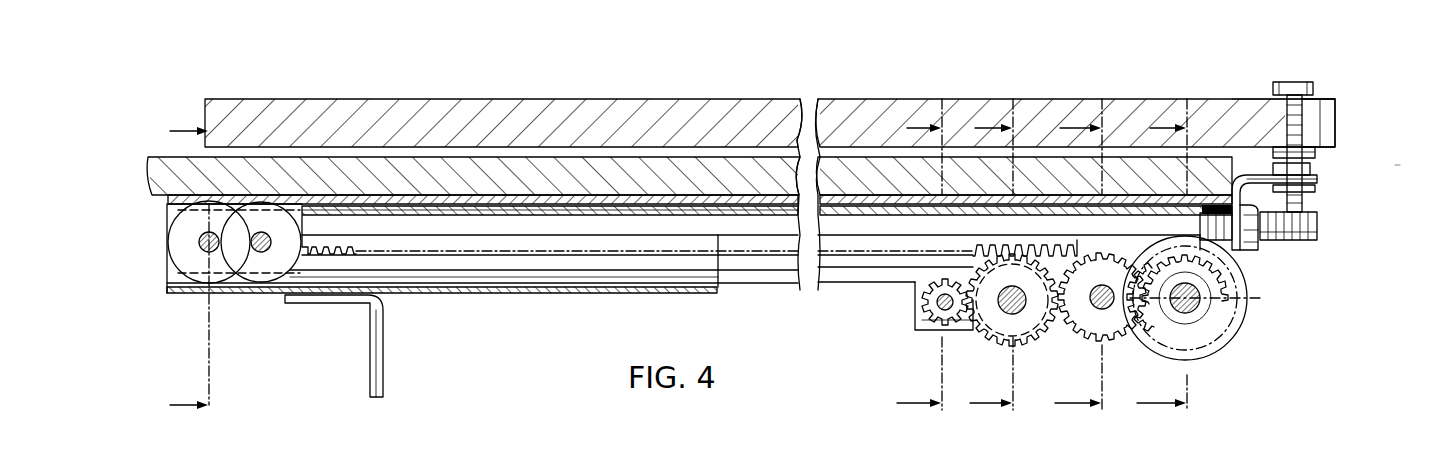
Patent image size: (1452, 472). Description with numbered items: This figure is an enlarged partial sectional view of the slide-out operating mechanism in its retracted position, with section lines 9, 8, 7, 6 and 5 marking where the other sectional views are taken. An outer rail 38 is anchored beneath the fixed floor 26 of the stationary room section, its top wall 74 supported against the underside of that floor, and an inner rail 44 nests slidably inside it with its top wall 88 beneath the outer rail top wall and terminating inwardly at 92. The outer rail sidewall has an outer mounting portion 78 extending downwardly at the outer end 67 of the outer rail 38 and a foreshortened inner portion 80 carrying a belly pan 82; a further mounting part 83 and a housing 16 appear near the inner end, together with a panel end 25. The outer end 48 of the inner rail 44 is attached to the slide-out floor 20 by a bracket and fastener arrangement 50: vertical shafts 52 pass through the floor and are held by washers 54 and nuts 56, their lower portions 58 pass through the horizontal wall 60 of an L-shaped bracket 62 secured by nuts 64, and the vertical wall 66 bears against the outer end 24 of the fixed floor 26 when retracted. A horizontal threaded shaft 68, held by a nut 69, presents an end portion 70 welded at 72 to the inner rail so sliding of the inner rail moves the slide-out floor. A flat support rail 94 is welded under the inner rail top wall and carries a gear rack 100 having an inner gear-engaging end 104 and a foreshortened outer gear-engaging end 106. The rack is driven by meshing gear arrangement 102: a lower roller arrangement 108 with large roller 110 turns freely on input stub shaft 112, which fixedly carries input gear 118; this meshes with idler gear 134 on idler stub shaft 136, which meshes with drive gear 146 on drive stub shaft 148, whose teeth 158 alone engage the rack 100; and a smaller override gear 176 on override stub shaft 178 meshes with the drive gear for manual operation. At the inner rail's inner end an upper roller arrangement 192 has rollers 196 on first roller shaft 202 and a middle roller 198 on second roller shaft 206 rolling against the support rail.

The section line 9- 9 is at (178, 269).
The housing 16 is at (170, 212).
The slide-out floor 20 is at (857, 115).
The outer end of stationary room floor 24 is at (1242, 125).
The panel end 25 is at (1330, 120).
The fixed floor 26 is at (765, 167).
The outer rail 38 is at (617, 190).
The inner rail 44 is at (557, 206).
The outer end of inner rail 48 is at (1162, 215).
The bracket and fastener arrangement 50 is at (1394, 166).
The vertically oriented shaft 52 is at (1312, 132).
The washer 54 is at (1302, 128).
The nut 56 is at (1308, 92).
The lower portion of shaft 58 is at (1318, 229).
The horizontally oriented wall 60 is at (1320, 179).
The L-shaped bracket 62 is at (1268, 162).
The nut 64 is at (1312, 180).
The vertically oriented wall 66 is at (1233, 185).
The outer end of outer rail 67 is at (1226, 200).
The horizontally oriented threaded shaft 68 is at (1318, 243).
The nut 69 is at (1250, 253).
The end portion 70 is at (1238, 262).
The weld 72 is at (1085, 225).
The top wall of outer rail 74 is at (682, 198).
The outer mounting portion 78 is at (928, 330).
The inner portion 80 is at (848, 275).
The belly pan 82 is at (497, 295).
The mounting bracket 83 is at (380, 370).
The top wall of inner rail 88 is at (770, 237).
The inward termination of inner rail top wall 92 is at (308, 247).
The support rail 94 is at (705, 296).
The gear rack 100 is at (585, 255).
The meshing rotatable gear arrangement 102 is at (1053, 348).
The inner gear-engaging end 104 is at (310, 207).
The outer gear-engaging end 106 is at (1066, 246).
The lower roller arrangement 108 is at (1250, 330).
The large roller 110 is at (1208, 352).
The input stub shaft 112 is at (1205, 303).
The input gear 118 is at (1172, 335).
The idler gear 134 is at (1062, 340).
The idler stub shaft 136 is at (1127, 333).
The drive gear 146 is at (1003, 348).
The drive stub shaft 148 is at (1000, 315).
The gear teeth 158 is at (320, 257).
The override gear 176 is at (928, 322).
The override stub shaft 178 is at (925, 298).
The upper roller arrangement 192 is at (192, 296).
The roller 196 is at (182, 258).
The middle roller 198 is at (275, 273).
The first roller shaft 202 is at (200, 241).
The second roller shaft 206 is at (263, 234).
The section line 8- 8 is at (929, 268).
The section line 7- 7 is at (1001, 268).
The section line 6- 6 is at (1088, 268).
The section line 5- 5 is at (1171, 268).